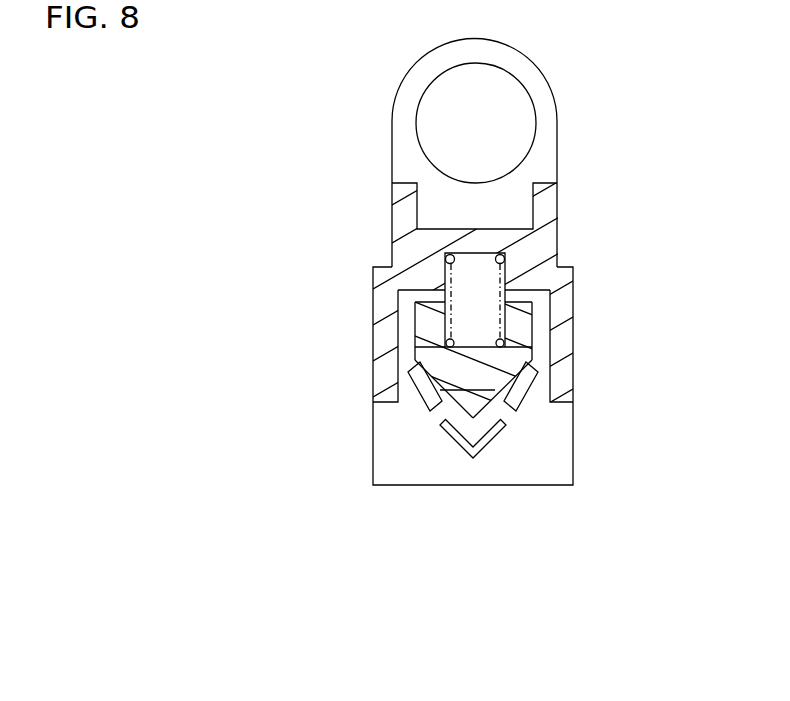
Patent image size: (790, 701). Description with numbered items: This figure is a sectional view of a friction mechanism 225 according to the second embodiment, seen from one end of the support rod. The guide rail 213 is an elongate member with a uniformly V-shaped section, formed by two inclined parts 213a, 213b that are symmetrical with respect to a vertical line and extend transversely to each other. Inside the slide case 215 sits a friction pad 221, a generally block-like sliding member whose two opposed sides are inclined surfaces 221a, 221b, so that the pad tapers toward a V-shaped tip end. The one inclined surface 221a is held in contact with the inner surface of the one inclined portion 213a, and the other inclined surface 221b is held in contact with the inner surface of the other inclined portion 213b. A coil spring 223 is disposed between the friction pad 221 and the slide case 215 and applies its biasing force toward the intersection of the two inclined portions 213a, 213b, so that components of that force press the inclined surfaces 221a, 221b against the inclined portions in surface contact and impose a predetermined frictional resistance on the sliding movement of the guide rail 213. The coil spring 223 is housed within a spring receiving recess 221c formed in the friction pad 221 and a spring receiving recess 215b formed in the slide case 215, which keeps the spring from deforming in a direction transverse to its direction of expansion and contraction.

The guide rail 213 is at (472, 446).
The inclined part 213a is at (507, 404).
The inclined part 213b is at (447, 408).
The slide case 215 is at (553, 108).
The spring receiving recess 215b is at (475, 277).
The friction pad 221 is at (522, 304).
The inclined surface 221a is at (541, 387).
The inclined surface 221b is at (410, 389).
The spring receiving recess 221c is at (470, 331).
The coil spring 223 is at (452, 347).
The friction mechanism 225 is at (542, 330).